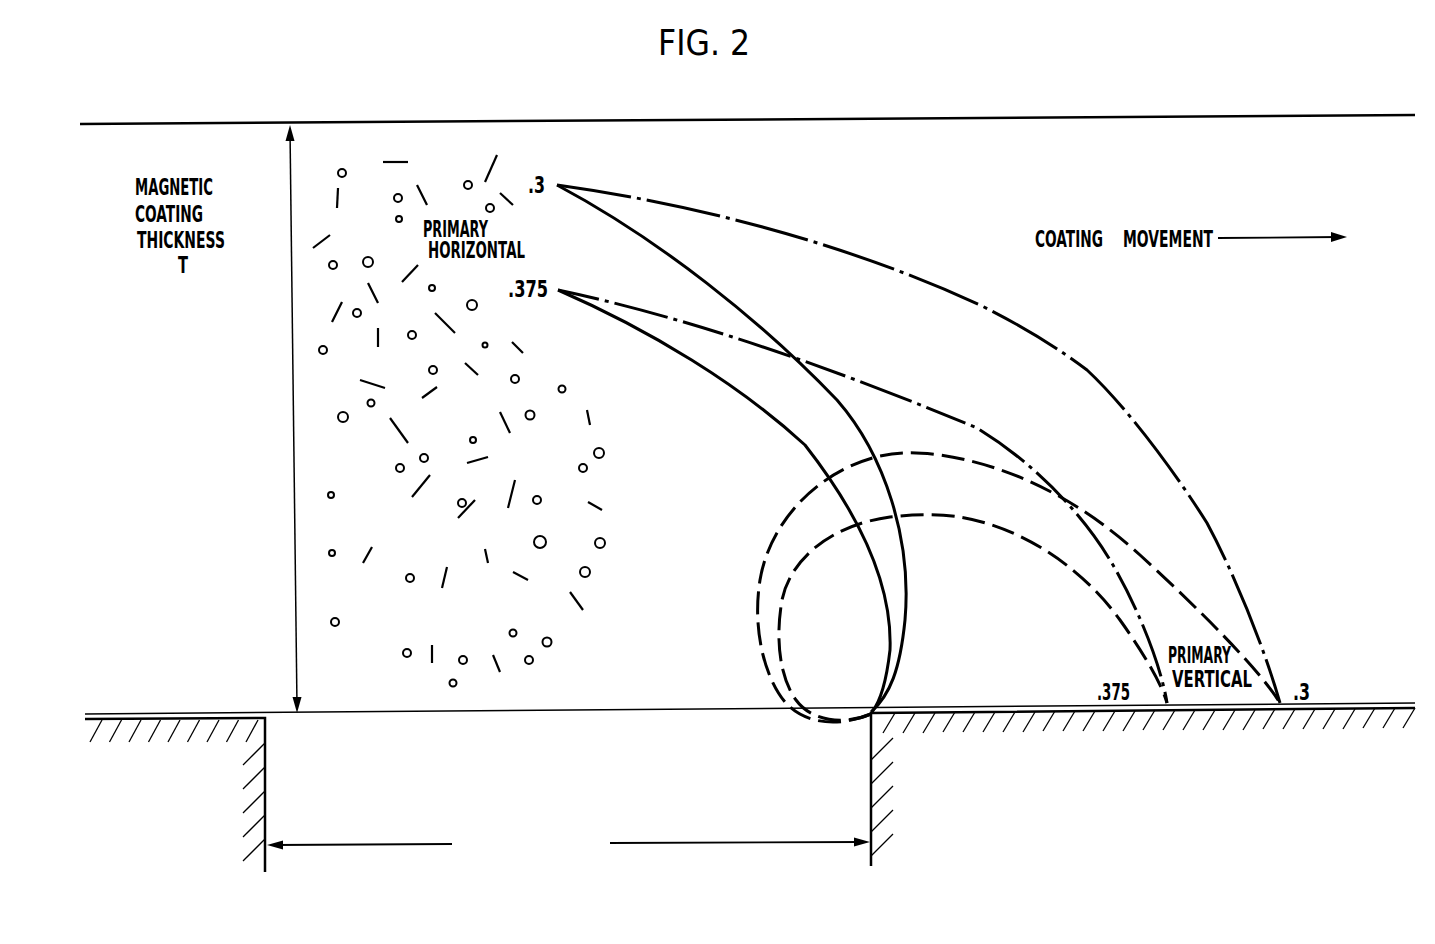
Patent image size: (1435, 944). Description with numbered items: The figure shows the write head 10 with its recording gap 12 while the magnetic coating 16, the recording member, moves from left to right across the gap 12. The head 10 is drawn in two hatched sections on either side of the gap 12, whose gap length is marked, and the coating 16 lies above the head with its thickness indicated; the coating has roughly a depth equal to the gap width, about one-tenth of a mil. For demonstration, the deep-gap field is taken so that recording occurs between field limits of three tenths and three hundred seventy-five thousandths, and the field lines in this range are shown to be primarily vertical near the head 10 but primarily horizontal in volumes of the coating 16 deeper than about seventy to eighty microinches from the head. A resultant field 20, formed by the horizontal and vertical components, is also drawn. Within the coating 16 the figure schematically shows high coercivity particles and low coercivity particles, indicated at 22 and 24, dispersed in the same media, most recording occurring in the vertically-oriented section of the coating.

The write head 10 is at (186, 822).
The gap 12 is at (749, 787).
The magnetic coating 16 is at (1051, 169).
The resultant field 20 is at (1087, 370).
The acicular magnetic particles (lengthwise) 22 is at (588, 416).
The magnetic particles (end view) 24 is at (347, 421).